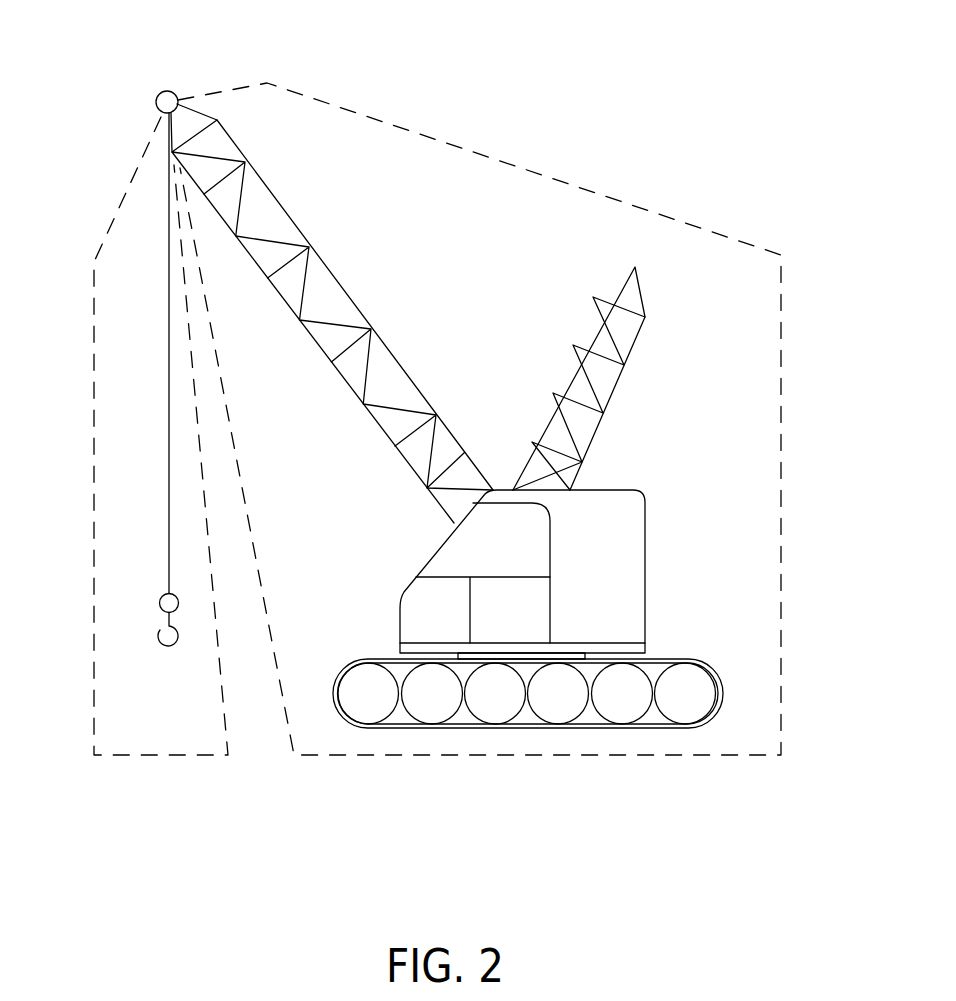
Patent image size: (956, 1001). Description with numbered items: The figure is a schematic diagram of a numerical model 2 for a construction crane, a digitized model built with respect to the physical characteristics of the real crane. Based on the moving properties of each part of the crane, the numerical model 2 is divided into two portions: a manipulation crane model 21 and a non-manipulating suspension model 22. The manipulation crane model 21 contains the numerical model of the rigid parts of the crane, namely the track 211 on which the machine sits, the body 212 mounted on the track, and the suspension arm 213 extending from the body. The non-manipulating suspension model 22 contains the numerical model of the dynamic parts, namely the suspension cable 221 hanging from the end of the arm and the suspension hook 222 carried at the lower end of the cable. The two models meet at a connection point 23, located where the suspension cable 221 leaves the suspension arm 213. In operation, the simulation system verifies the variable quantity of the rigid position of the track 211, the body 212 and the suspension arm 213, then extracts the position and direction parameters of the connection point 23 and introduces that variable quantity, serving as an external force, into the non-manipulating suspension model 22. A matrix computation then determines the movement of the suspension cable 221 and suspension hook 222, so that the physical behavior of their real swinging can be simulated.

The numerical model 2 is at (494, 26).
The manipulation crane model 21 is at (782, 405).
The track 211 is at (593, 729).
The body 212 is at (646, 565).
The suspension arm 213 is at (360, 307).
The non-manipulating suspension model 22 is at (94, 447).
The suspension cable 221 is at (168, 508).
The suspension hook 222 is at (166, 622).
The connection point 23 is at (167, 91).